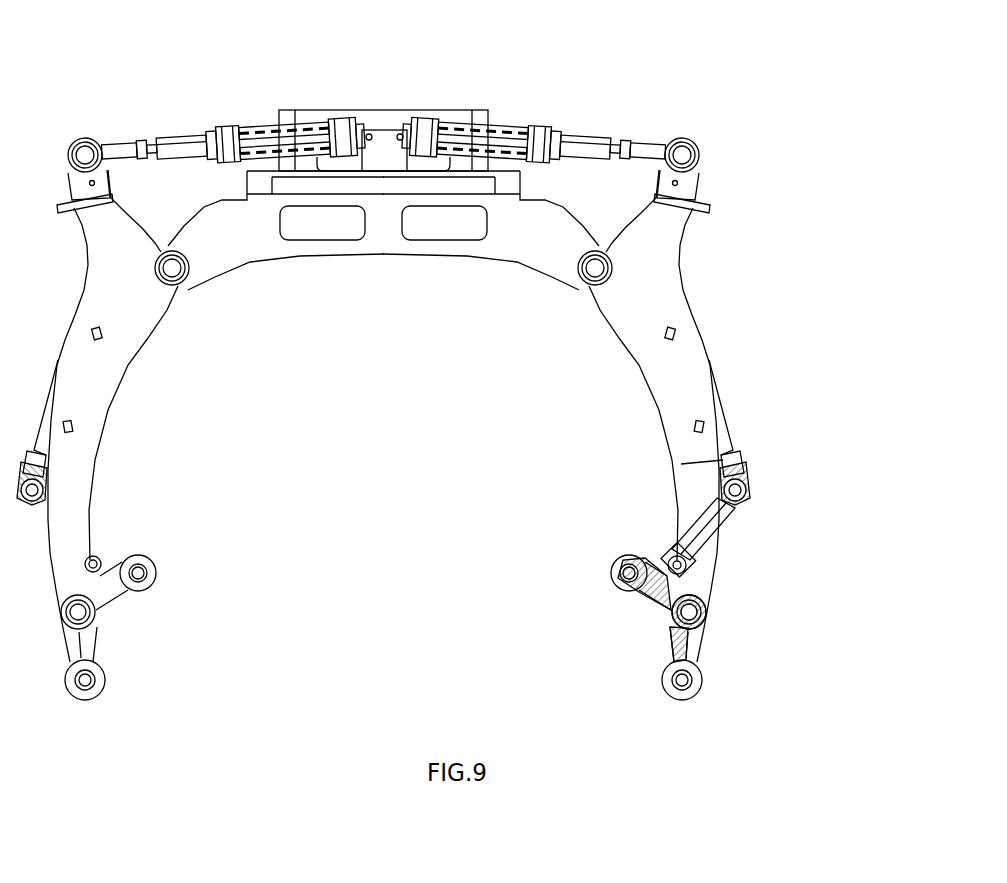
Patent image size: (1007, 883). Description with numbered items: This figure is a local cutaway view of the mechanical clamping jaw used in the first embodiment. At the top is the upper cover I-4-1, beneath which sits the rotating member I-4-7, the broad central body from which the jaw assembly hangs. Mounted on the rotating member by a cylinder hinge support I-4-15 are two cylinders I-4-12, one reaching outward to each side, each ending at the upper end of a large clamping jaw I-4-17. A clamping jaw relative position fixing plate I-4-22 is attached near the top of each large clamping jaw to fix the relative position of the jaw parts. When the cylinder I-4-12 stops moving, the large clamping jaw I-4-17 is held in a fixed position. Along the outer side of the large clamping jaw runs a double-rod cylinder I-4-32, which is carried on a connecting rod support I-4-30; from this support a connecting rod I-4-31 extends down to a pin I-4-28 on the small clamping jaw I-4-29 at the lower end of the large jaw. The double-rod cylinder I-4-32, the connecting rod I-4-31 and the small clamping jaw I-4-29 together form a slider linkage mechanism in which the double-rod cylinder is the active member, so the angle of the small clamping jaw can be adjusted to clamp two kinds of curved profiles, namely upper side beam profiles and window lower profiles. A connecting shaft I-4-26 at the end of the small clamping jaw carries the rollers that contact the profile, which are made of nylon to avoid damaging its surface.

The upper cover I-4-1 is at (488, 110).
The rotating member I-4-7 is at (247, 218).
The cylinder I-4-12 is at (253, 132).
The cylinder hinge support I-4-15 is at (385, 142).
The large clamping jaw I-4-17 is at (660, 315).
The clamping jaw relative position fixing plate I-4-22 is at (677, 198).
The connecting shaft I-4-26 is at (677, 680).
The pin I-4-28 is at (680, 565).
The small clamping jaw I-4-29 is at (680, 592).
The connecting rod support I-4-30 is at (878, 453).
The connecting rod I-4-31 is at (708, 527).
The double-rod cylinder I-4-32 is at (878, 375).